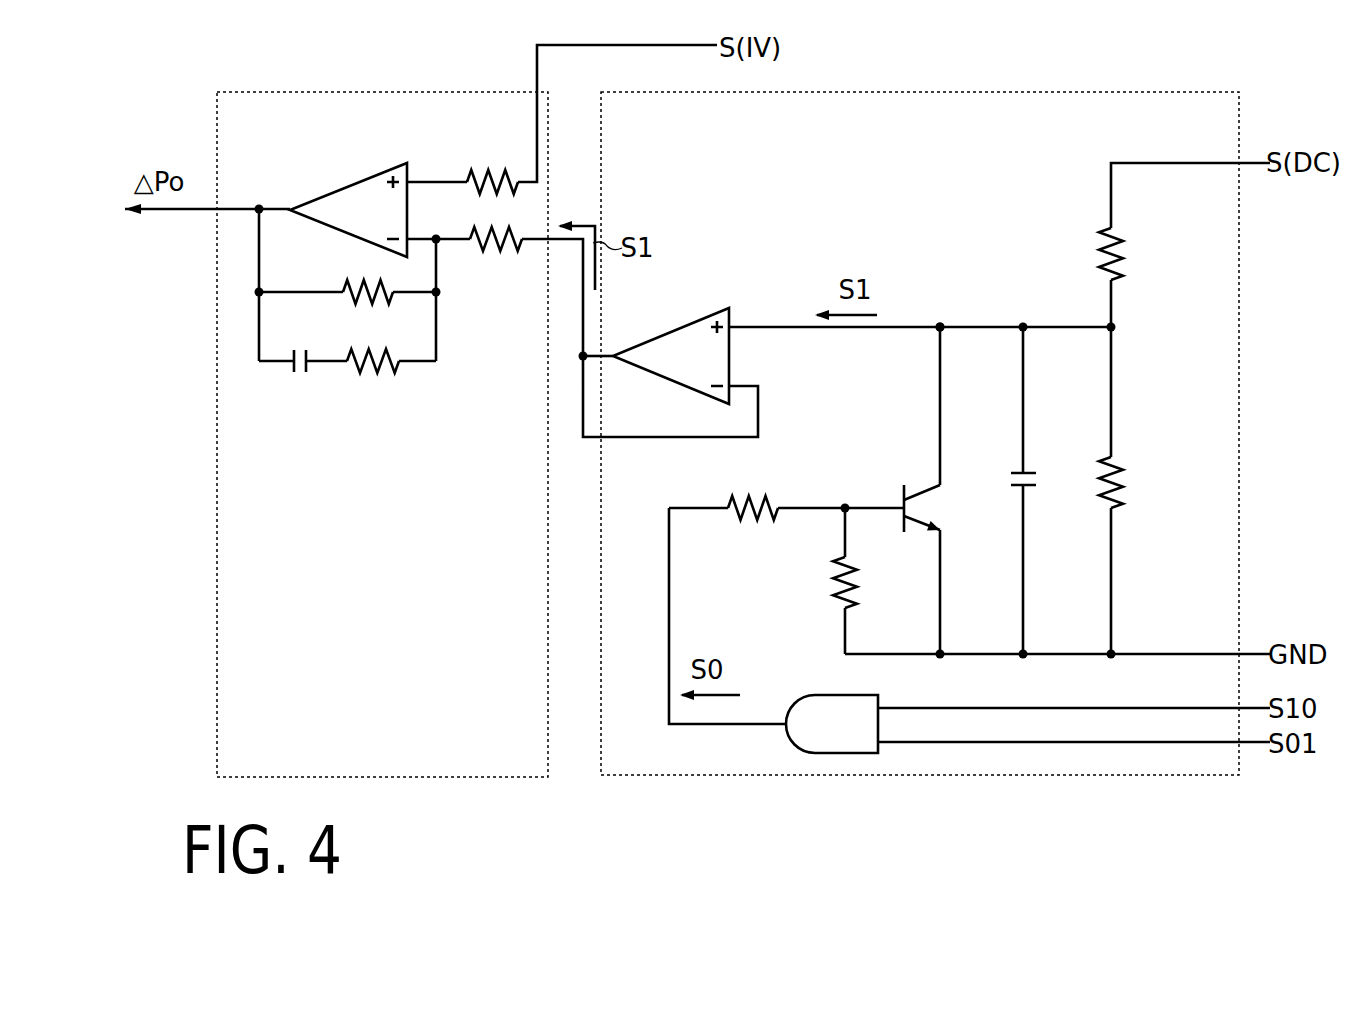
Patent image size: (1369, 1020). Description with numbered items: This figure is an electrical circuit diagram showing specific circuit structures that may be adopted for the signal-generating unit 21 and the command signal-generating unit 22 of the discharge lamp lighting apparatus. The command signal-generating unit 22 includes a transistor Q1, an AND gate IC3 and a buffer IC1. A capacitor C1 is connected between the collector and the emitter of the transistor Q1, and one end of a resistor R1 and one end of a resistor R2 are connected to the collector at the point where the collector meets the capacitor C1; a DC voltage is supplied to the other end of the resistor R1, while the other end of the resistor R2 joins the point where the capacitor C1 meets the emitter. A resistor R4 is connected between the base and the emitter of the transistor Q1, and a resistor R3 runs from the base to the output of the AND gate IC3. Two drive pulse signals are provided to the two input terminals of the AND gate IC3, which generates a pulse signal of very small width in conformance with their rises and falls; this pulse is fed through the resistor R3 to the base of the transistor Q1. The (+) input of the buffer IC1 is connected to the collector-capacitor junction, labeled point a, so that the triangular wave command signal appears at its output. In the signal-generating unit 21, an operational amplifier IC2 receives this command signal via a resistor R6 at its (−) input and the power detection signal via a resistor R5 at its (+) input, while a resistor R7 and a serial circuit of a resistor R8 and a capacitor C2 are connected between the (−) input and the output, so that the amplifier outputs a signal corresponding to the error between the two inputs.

The signal-generating unit 21 is at (333, 92).
The command signal-generating unit 22 is at (994, 92).
The buffer IC1 is at (666, 340).
The operational amplifier IC2 is at (353, 191).
The AND gate IC3 is at (820, 701).
The resistor R1 is at (1125, 249).
The resistor R2 is at (1125, 479).
The resistor R3 is at (757, 521).
The resistor R4 is at (833, 591).
The resistor R5 is at (496, 167).
The resistor R6 is at (504, 251).
The resistor R7 is at (362, 300).
The resistor R8 is at (390, 373).
The capacitor C1 is at (1038, 479).
The capacitor C2 is at (302, 372).
The transistor Q1 is at (925, 506).
The node a is at (939, 325).